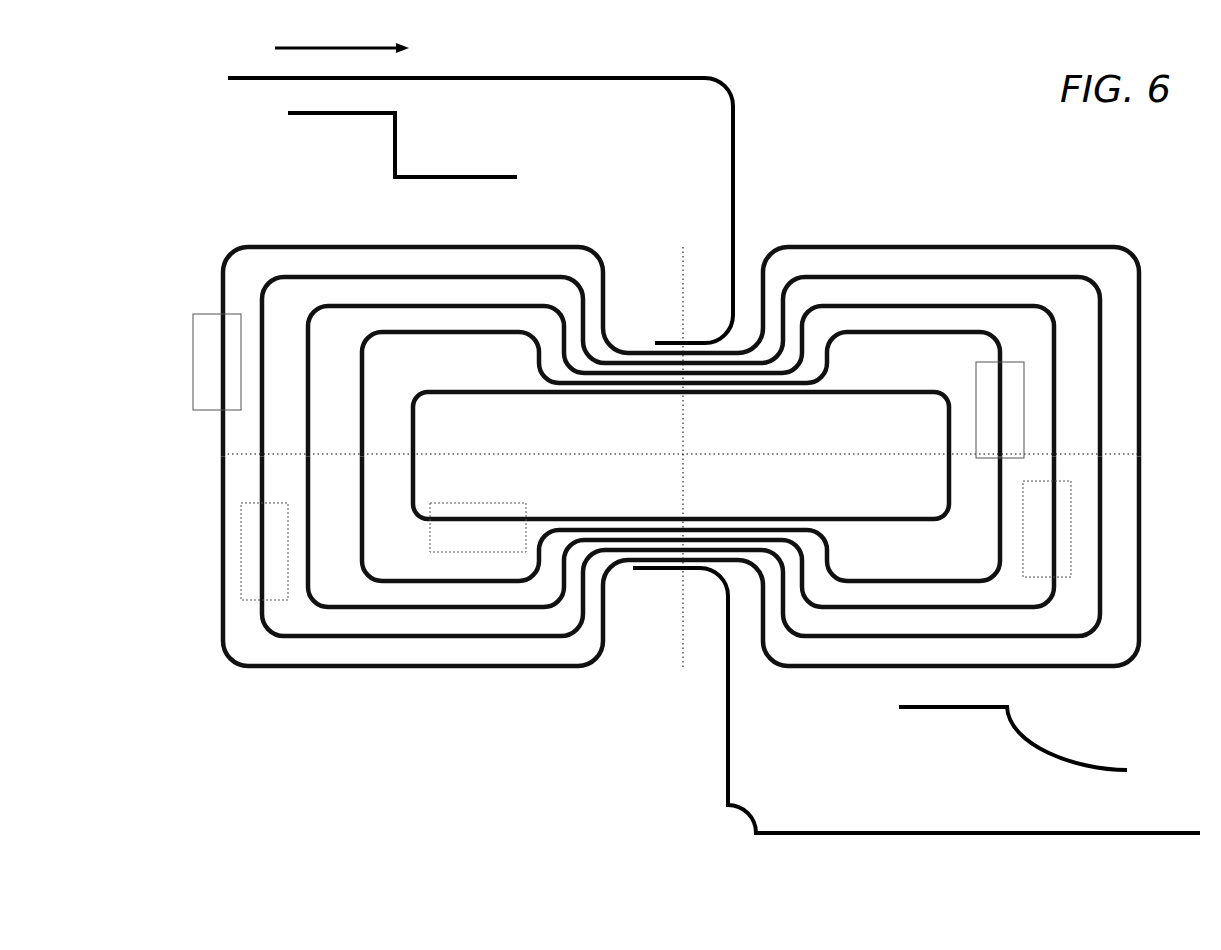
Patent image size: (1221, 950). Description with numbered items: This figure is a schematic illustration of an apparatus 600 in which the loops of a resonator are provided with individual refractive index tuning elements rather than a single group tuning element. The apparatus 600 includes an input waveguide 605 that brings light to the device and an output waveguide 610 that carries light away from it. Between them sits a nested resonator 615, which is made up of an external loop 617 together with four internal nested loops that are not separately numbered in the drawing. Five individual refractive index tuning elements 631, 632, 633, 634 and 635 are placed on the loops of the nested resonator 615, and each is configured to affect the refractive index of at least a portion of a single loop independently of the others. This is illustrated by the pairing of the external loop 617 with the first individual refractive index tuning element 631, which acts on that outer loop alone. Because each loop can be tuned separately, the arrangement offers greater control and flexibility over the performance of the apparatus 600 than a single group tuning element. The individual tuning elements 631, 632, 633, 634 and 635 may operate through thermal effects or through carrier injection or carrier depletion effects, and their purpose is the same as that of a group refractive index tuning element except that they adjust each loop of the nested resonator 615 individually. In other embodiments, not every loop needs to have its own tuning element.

The apparatus 600 is at (900, 187).
The input waveguide 605 is at (736, 168).
The output waveguide 610 is at (733, 800).
The nested resonator 615 is at (187, 123).
The external loop 617 is at (280, 672).
The first individual refractive index tuning element 631 is at (190, 353).
The individual refractive index tuning element 632 is at (242, 600).
The individual refractive index tuning element 633 is at (1071, 532).
The individual refractive index tuning element 634 is at (1024, 393).
The individual refractive index tuning element 635 is at (467, 552).